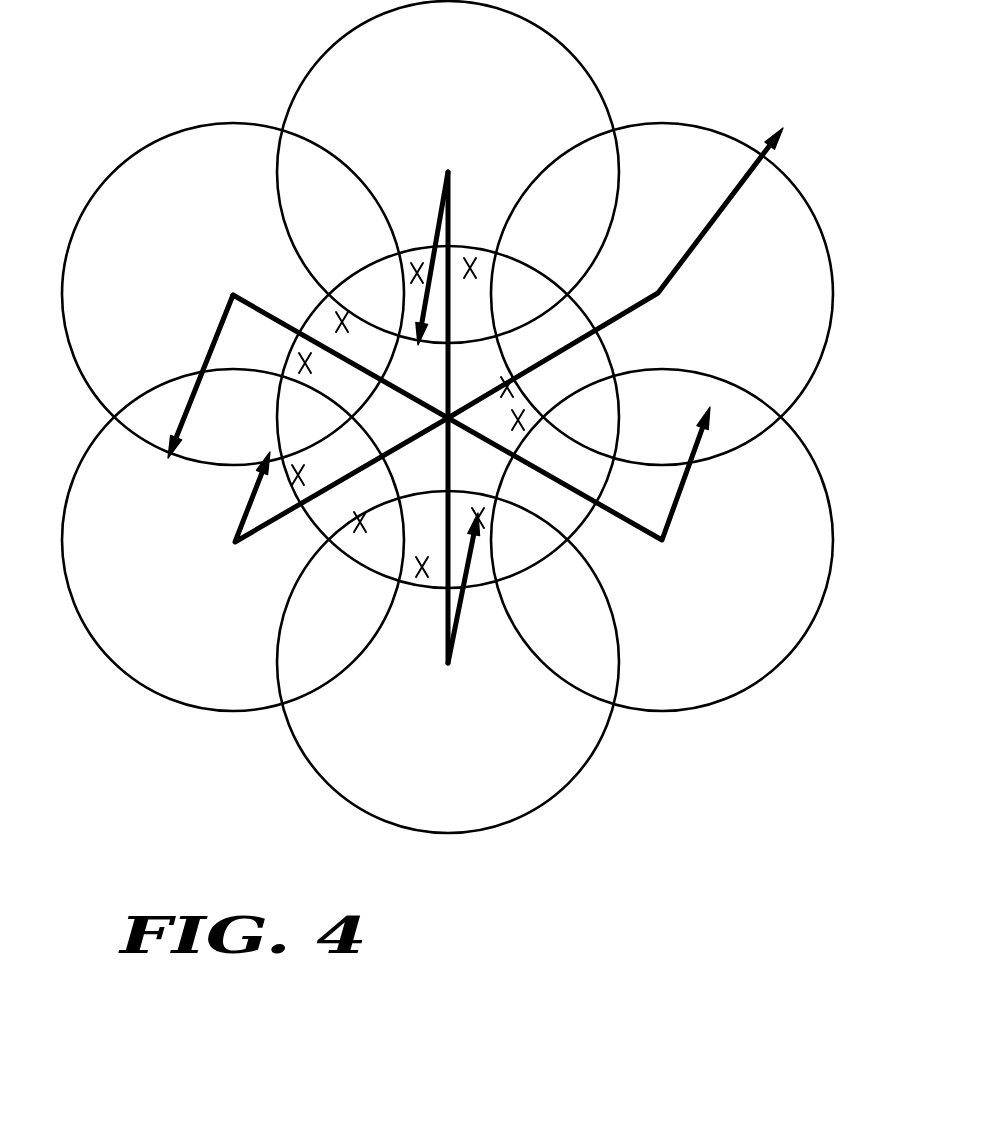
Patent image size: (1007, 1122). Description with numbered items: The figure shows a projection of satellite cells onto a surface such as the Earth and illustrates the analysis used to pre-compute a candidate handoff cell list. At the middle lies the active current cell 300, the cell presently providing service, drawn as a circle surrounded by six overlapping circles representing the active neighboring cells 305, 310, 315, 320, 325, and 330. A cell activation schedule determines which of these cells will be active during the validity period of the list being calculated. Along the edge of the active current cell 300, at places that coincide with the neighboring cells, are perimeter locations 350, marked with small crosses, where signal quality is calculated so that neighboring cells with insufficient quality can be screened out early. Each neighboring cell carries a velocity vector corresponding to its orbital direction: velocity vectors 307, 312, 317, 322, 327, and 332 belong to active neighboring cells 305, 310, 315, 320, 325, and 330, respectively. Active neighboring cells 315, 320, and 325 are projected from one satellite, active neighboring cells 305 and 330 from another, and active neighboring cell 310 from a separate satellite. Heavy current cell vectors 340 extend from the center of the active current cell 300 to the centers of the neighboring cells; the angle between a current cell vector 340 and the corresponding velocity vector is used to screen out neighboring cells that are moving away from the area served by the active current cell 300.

The active current cell 300 is at (460, 248).
The active neighboring cell 305 is at (428, 79).
The velocity vector 307 is at (442, 200).
The active neighboring cell 310 is at (732, 298).
The velocity vector 312 is at (768, 153).
The active neighboring cell 315 is at (722, 600).
The velocity vector 317 is at (672, 523).
The active neighboring cell 320 is at (412, 782).
The velocity vector 322 is at (463, 628).
The active neighboring cell 325 is at (167, 637).
The velocity vector 327 is at (243, 512).
The active neighboring cell 330 is at (117, 253).
The velocity vector 332 is at (217, 327).
The current cell vector 340 is at (257, 300).
The perimeter locations 350 is at (473, 257).